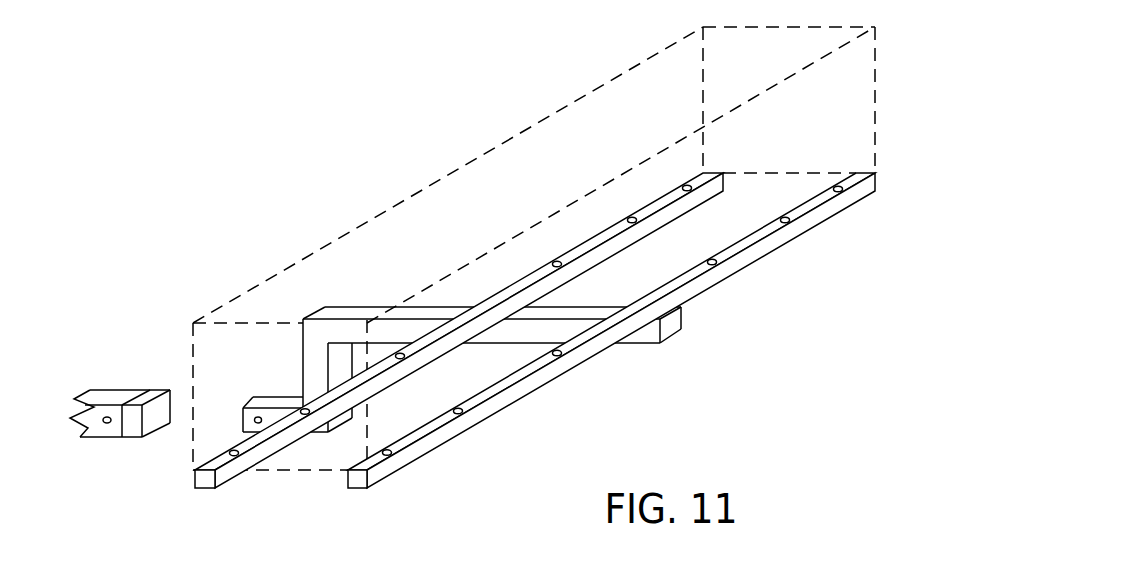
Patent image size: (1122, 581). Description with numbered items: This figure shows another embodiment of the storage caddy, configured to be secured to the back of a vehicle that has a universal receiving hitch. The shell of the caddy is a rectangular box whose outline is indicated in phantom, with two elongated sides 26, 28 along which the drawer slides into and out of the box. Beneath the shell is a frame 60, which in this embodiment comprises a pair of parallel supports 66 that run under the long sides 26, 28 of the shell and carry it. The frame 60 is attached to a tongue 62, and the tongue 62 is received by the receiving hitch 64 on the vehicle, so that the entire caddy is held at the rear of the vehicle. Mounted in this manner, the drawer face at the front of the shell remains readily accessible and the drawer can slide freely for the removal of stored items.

The elongated side 26 is at (534, 248).
The elongated side 28 is at (825, 100).
The frame 60 is at (535, 330).
The tongue 62 is at (462, 306).
The receiving hitch 64 is at (121, 438).
The parallel supports 66 is at (250, 502).